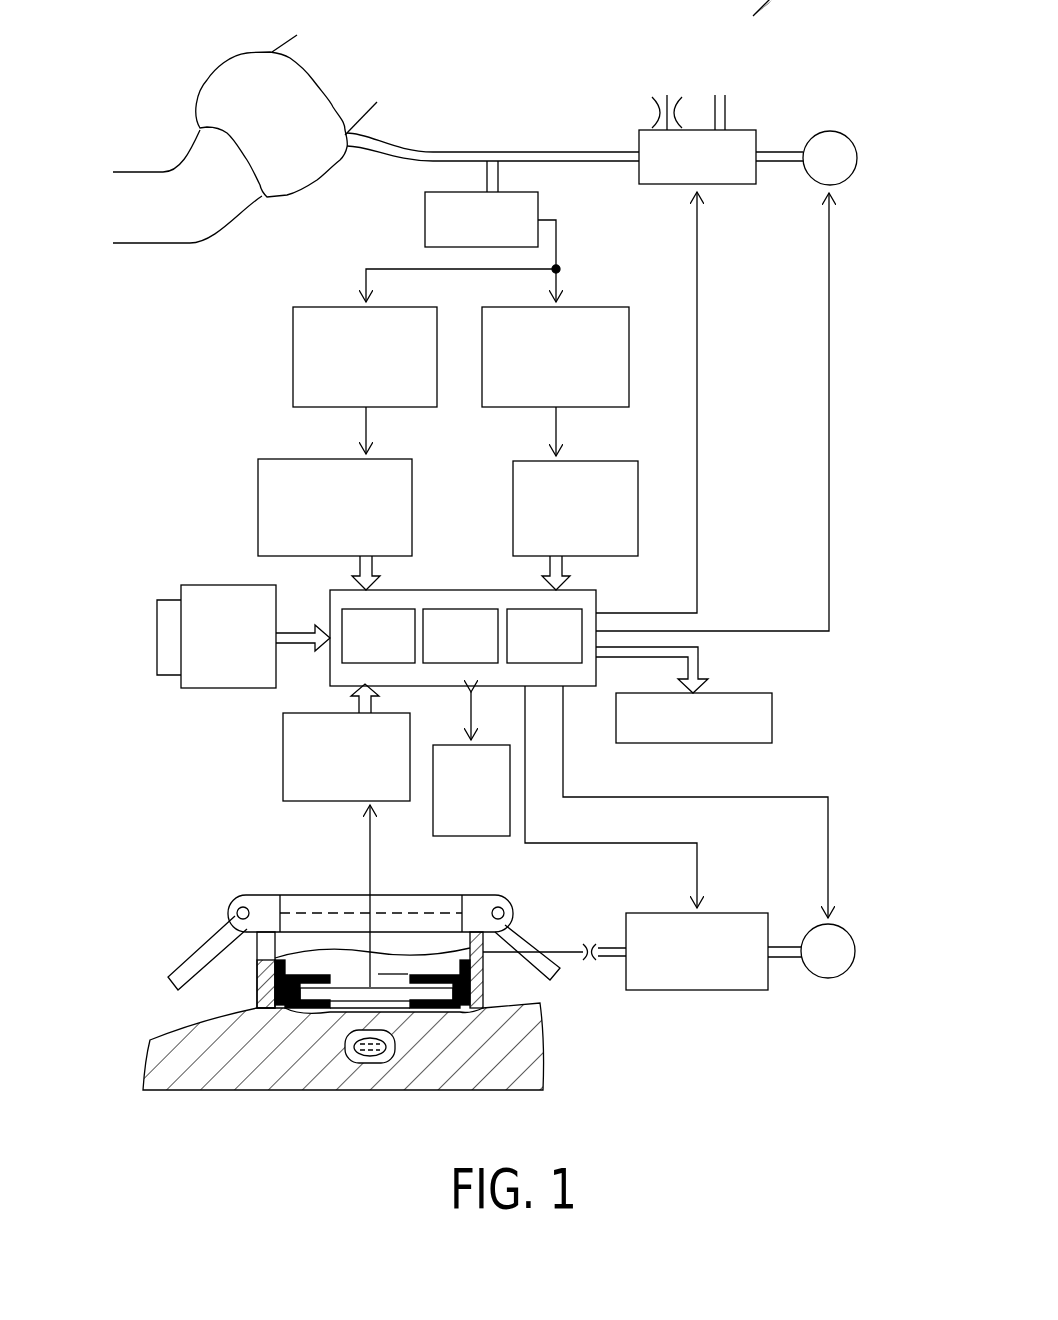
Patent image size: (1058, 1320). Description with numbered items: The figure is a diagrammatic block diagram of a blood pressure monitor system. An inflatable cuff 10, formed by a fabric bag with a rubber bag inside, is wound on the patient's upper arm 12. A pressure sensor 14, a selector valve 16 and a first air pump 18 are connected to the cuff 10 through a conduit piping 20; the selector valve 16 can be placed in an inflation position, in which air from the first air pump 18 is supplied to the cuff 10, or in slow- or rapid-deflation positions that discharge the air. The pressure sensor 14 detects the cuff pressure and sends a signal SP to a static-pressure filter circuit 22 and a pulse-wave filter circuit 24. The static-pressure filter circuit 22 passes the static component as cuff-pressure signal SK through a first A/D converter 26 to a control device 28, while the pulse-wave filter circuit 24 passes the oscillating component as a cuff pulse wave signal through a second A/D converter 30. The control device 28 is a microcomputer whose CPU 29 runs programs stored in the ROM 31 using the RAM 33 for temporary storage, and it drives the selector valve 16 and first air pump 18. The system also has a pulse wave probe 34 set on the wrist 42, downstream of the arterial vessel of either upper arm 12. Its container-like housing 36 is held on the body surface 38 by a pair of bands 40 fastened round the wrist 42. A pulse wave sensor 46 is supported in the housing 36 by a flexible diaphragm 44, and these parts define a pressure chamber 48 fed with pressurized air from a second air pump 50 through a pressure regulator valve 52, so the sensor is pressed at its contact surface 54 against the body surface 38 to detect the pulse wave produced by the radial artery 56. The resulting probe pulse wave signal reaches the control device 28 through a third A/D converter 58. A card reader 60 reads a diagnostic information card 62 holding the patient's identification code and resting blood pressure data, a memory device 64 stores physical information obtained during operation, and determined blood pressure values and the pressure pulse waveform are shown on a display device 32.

The inflatable cuff 10 is at (234, 83).
The upper arm 12 is at (240, 183).
The pressure sensor 14 is at (425, 228).
The selector valve 16 is at (747, 137).
The first air pump 18 is at (842, 140).
The conduit piping 20 is at (447, 152).
The static-pressure filter circuit 22 is at (343, 307).
The pulse-wave filter circuit 24 is at (590, 307).
The first analog to digital converter 26 is at (258, 492).
The control device 28 is at (560, 555).
The central processing unit 29 is at (350, 628).
The second analog to digital converter 30 is at (630, 508).
The read only memory 31 is at (470, 615).
The display device 32 is at (763, 717).
The random access memory 33 is at (575, 612).
The pulse wave probe 34 is at (361, 959).
The container-like housing 36 is at (260, 985).
The body surface 38 is at (308, 1046).
The bands 40 is at (200, 950).
The wrist 42 is at (135, 1057).
The flexible diaphragm 44 is at (275, 1017).
The pulse wave sensor 46 is at (324, 1023).
The pressure chamber 48 is at (372, 962).
The second air pump 50 is at (835, 968).
The pressure regulator valve 52 is at (732, 985).
The contact surface 54 is at (395, 1058).
The radial artery 56 is at (362, 1063).
The third analog to digital converter 58 is at (292, 780).
The card reader 60 is at (250, 598).
The diagnostic information card 62 is at (167, 655).
The memory device 64 is at (450, 827).